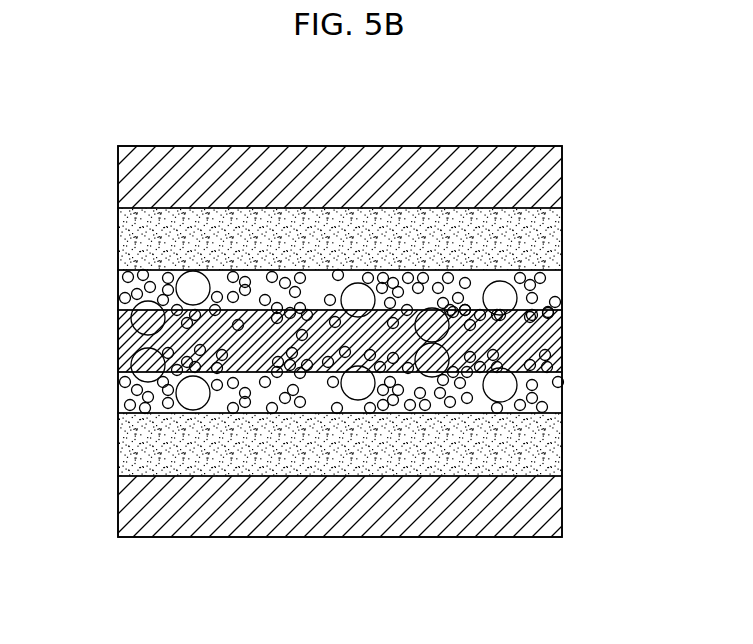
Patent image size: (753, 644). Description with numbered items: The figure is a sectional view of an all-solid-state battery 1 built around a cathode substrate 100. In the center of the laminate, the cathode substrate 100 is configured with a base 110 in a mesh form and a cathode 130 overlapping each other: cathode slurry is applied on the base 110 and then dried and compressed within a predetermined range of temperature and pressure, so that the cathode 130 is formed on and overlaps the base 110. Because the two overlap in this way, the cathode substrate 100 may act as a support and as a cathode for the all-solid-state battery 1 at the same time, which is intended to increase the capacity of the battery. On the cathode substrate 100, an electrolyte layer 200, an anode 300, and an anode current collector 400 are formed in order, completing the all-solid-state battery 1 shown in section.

The all-solid-state battery 1 is at (93, 193).
The cathode substrate 100 is at (386, 424).
The base 110 is at (565, 344).
The cathode 130 is at (565, 288).
The electrolyte layer 200 is at (565, 241).
The anode 300 is at (565, 178).
The anode current collector 400 is at (477, 107).